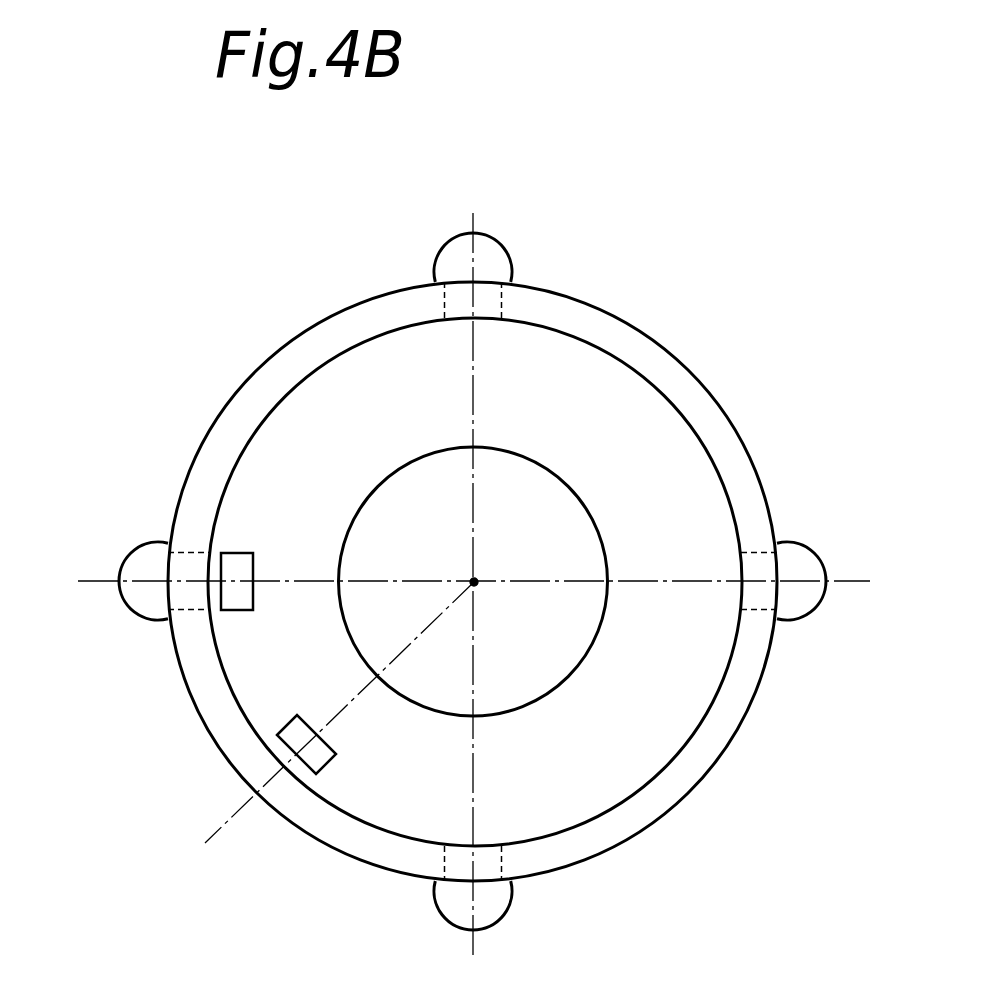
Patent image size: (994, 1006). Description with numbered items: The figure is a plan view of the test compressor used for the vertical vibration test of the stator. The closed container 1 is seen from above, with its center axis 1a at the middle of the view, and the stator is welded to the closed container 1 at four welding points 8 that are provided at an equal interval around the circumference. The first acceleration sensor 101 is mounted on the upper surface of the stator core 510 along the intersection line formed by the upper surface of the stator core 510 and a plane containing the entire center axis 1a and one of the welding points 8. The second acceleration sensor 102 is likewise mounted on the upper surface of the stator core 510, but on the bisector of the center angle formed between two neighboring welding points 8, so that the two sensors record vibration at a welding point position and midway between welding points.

The closed container 1 is at (670, 347).
The center axis 1a is at (474, 582).
The welding points 8 is at (507, 258).
The stator core 510 is at (335, 398).
The first acceleration sensor 101 is at (237, 553).
The second acceleration sensor 102 is at (277, 735).